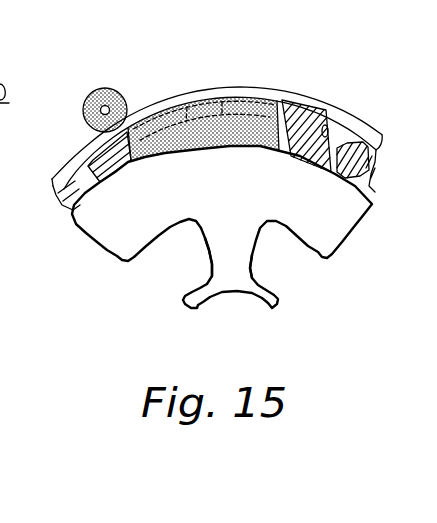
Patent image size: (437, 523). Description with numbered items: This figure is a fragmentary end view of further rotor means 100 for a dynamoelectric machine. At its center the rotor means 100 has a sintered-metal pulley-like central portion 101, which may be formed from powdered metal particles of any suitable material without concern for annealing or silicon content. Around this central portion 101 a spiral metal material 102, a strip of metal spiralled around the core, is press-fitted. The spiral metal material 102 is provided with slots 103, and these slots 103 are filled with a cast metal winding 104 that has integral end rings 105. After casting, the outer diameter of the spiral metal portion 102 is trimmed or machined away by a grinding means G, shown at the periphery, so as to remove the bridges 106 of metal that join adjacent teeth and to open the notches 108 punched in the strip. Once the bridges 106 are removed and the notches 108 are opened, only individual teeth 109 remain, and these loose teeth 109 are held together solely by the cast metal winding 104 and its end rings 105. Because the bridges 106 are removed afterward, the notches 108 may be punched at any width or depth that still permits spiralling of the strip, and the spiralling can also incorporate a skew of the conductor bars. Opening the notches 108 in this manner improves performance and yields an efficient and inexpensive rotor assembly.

The rotor means 100 is at (128, 245).
The sintered-metal pulley-like central portion 101 is at (243, 210).
The spiral metal material 102 is at (335, 163).
The slots 103 is at (328, 126).
The cast metal winding 104 is at (300, 128).
The integral end rings 105 is at (205, 113).
The bridges 106 is at (174, 94).
The notches 108 is at (98, 142).
The individual teeth 109 is at (90, 192).
The grinding means G is at (105, 88).